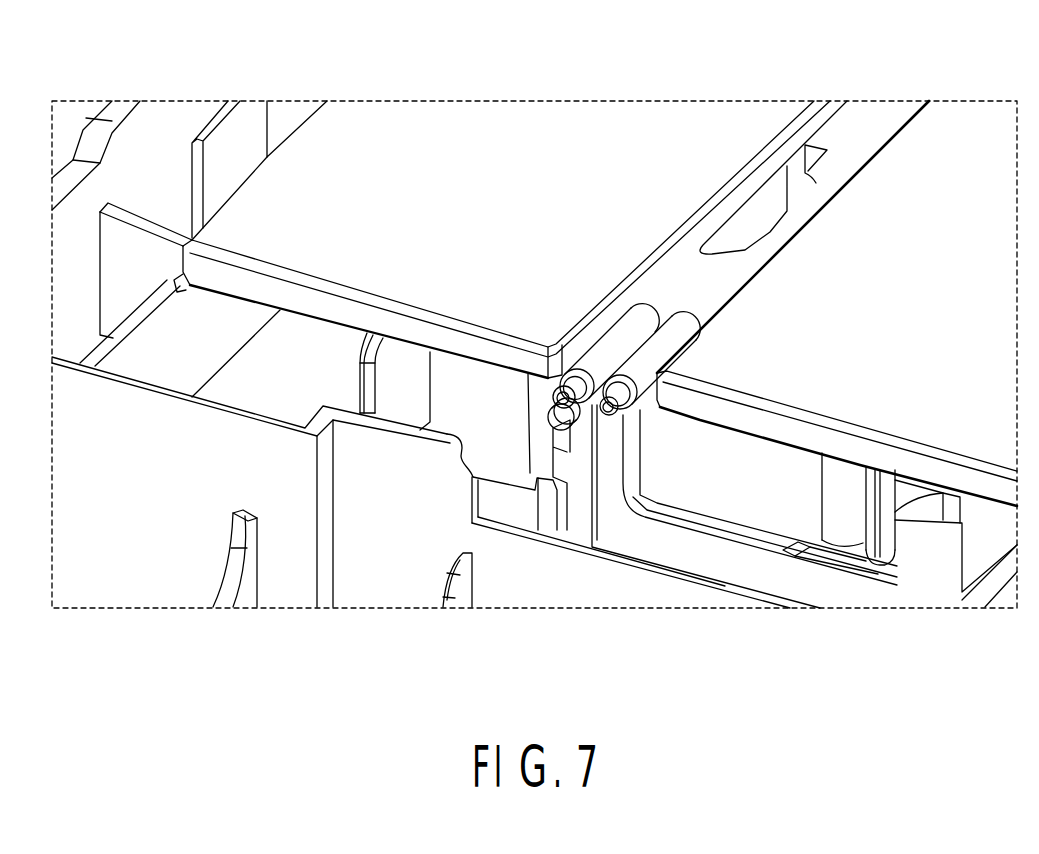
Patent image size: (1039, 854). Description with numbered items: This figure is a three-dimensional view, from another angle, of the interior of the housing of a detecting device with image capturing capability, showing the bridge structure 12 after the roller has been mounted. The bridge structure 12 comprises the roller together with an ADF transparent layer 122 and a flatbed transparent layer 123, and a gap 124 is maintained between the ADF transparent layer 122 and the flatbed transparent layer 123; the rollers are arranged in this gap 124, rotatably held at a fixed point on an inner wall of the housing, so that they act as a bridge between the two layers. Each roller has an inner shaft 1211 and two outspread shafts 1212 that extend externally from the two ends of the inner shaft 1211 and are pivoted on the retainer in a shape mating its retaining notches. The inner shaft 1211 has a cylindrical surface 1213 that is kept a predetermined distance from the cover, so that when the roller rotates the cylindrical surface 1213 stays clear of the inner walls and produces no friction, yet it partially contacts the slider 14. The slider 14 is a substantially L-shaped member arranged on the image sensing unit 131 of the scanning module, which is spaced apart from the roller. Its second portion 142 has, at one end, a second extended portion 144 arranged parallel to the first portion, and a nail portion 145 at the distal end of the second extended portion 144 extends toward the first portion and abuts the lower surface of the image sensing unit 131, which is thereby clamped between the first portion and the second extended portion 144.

The bridge structure 12 is at (512, 44).
The ADF transparent layer 122 is at (512, 130).
The flatbed transparent layer 123 is at (968, 126).
The gap 124 is at (707, 283).
The inner shaft 1211 is at (637, 317).
The outspread shaft 1212 is at (550, 400).
The cylindrical surface 1213 is at (610, 347).
The image sensing unit 131 is at (727, 478).
The slider 14 is at (889, 560).
The second portion 142 is at (897, 505).
The second extended portion 144 is at (840, 560).
The nail portion 145 is at (800, 553).